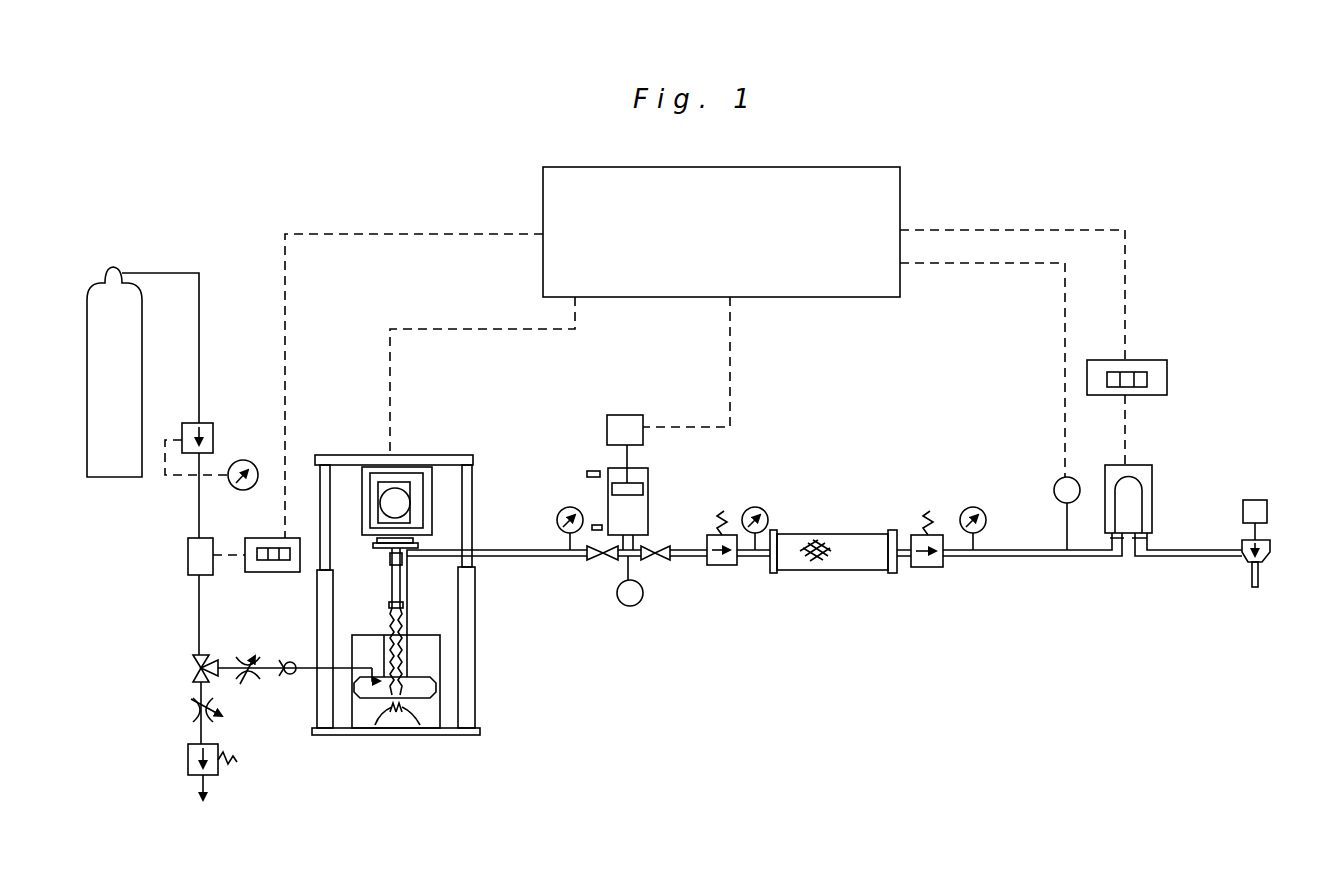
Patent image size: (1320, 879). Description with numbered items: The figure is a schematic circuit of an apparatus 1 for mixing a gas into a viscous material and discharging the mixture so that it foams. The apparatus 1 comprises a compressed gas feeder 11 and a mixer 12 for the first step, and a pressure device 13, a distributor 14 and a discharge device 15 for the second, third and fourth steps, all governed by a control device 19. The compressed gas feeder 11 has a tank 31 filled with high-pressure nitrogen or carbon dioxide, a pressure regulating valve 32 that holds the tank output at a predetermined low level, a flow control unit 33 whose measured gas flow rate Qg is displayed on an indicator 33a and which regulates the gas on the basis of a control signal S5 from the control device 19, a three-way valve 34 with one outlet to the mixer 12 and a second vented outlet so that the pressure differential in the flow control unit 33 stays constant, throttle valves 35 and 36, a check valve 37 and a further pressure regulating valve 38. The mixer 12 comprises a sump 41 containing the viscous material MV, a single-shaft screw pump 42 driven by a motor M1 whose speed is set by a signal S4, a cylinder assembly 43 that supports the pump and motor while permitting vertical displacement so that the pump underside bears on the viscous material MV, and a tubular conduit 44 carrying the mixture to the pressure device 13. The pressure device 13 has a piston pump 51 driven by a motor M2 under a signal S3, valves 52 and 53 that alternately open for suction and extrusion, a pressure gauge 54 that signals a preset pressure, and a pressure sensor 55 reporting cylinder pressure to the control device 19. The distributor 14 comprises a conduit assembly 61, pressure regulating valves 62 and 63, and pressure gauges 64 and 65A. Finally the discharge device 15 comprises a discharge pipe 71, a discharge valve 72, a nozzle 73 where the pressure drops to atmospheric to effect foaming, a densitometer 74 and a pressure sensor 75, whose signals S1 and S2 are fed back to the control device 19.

The apparatus 1 is at (434, 179).
The compressed gas feeder 11 is at (184, 240).
The mixer 12 is at (461, 422).
The pressure device 13 is at (711, 472).
The distributor 14 is at (870, 484).
The discharge device 15 is at (1216, 475).
The control device 19 is at (900, 186).
The tank 31 is at (143, 352).
The pressure regulating valve 32 is at (214, 423).
The flow control unit 33 is at (188, 546).
The indicator 33a is at (256, 538).
The three-way valve 34 is at (193, 663).
The throttle valve 35 is at (247, 656).
The throttle valve 36 is at (192, 712).
The check valve 37 is at (290, 677).
The pressure regulating valve 38 is at (188, 763).
The sump 41 is at (440, 655).
The single-shaft screw pump 42 is at (409, 618).
The cylinder assembly 43 is at (470, 585).
The tubular conduit 44 is at (512, 549).
The piston pump 51 is at (649, 511).
The valve 52 is at (603, 565).
The valve 53 is at (657, 565).
The pressure gauge 54 is at (570, 507).
The pressure sensor 55 is at (632, 606).
The conduit assembly 61 is at (875, 573).
The pressure regulating valve 62 is at (727, 566).
The pressure regulating valve 63 is at (937, 568).
The pressure gauge 64 is at (757, 507).
The pressure gauge 65A is at (975, 507).
The discharge pipe 71 is at (1043, 558).
The discharge valve 72 is at (1271, 549).
The nozzle 73 is at (1253, 578).
The densitometer 74 is at (1152, 506).
The pressure sensor 75 is at (1056, 498).
The motor M1 is at (398, 502).
The motor M2 is at (630, 415).
The viscous material MV is at (423, 710).
The gas flow rate Qg is at (173, 609).
The signal S1 is at (1126, 240).
The signal S2 is at (997, 264).
The signal S3 is at (732, 355).
The signal S4 is at (508, 329).
The control signal S5 is at (346, 234).